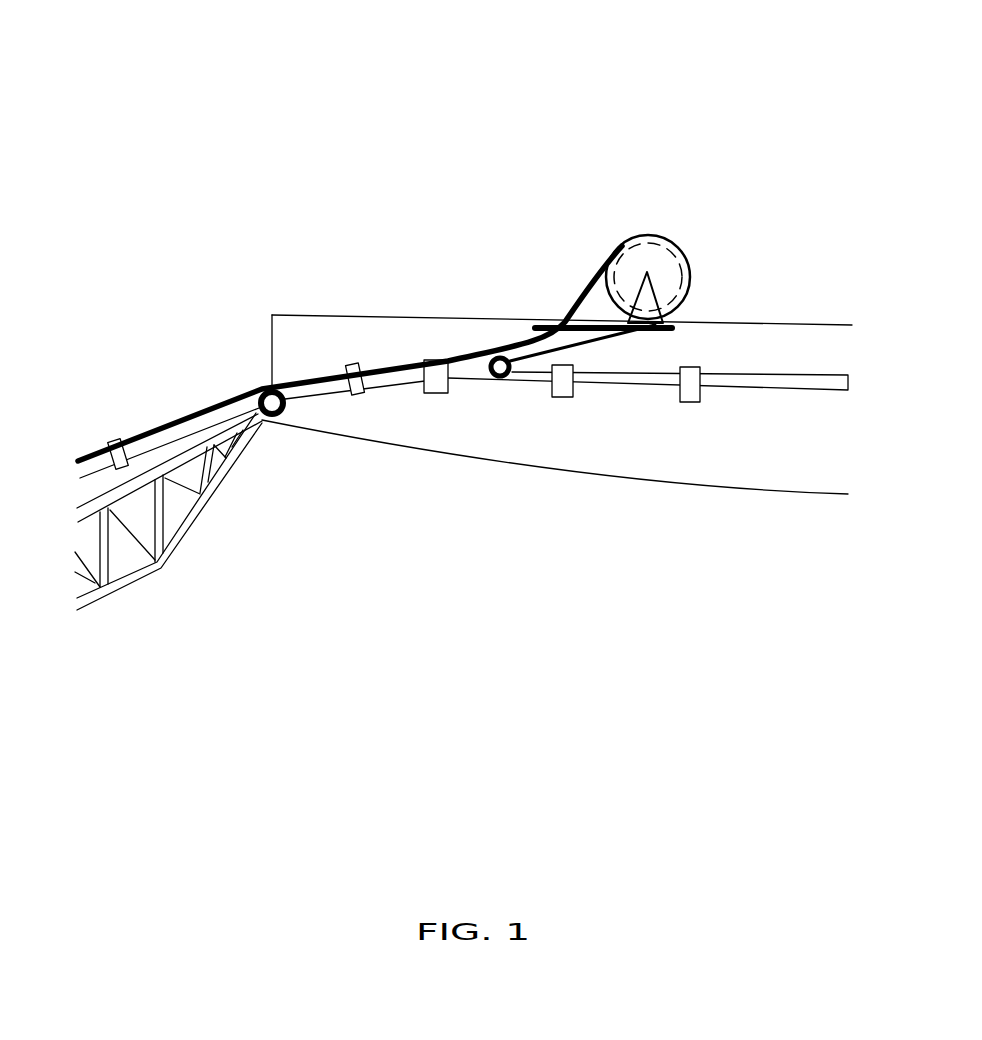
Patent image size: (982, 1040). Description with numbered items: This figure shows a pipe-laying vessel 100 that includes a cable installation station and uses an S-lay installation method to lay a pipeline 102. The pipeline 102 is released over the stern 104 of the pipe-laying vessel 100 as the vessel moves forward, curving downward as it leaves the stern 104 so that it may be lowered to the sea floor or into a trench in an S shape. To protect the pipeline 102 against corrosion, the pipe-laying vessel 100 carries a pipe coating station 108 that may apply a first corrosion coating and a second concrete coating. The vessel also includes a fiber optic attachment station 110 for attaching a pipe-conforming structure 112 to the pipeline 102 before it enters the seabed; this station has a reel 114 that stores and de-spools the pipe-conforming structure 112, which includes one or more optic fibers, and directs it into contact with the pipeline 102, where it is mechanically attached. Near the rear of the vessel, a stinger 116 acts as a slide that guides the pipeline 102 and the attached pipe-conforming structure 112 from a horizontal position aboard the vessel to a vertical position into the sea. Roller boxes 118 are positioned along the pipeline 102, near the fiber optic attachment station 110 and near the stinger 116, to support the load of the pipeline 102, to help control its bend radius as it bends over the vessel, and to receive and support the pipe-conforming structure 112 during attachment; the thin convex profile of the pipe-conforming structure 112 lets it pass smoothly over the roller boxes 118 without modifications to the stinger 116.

The pipe-laying vessel 100 is at (749, 100).
The pipeline 102 is at (313, 383).
The stern 104 is at (270, 442).
The pipe coating station 108 is at (563, 397).
The fiber optic attachment station 110 is at (436, 393).
The pipe-conforming structure 112 is at (583, 292).
The reel 114 is at (676, 250).
The stinger 116 is at (107, 593).
The roller boxes 118 is at (287, 405).